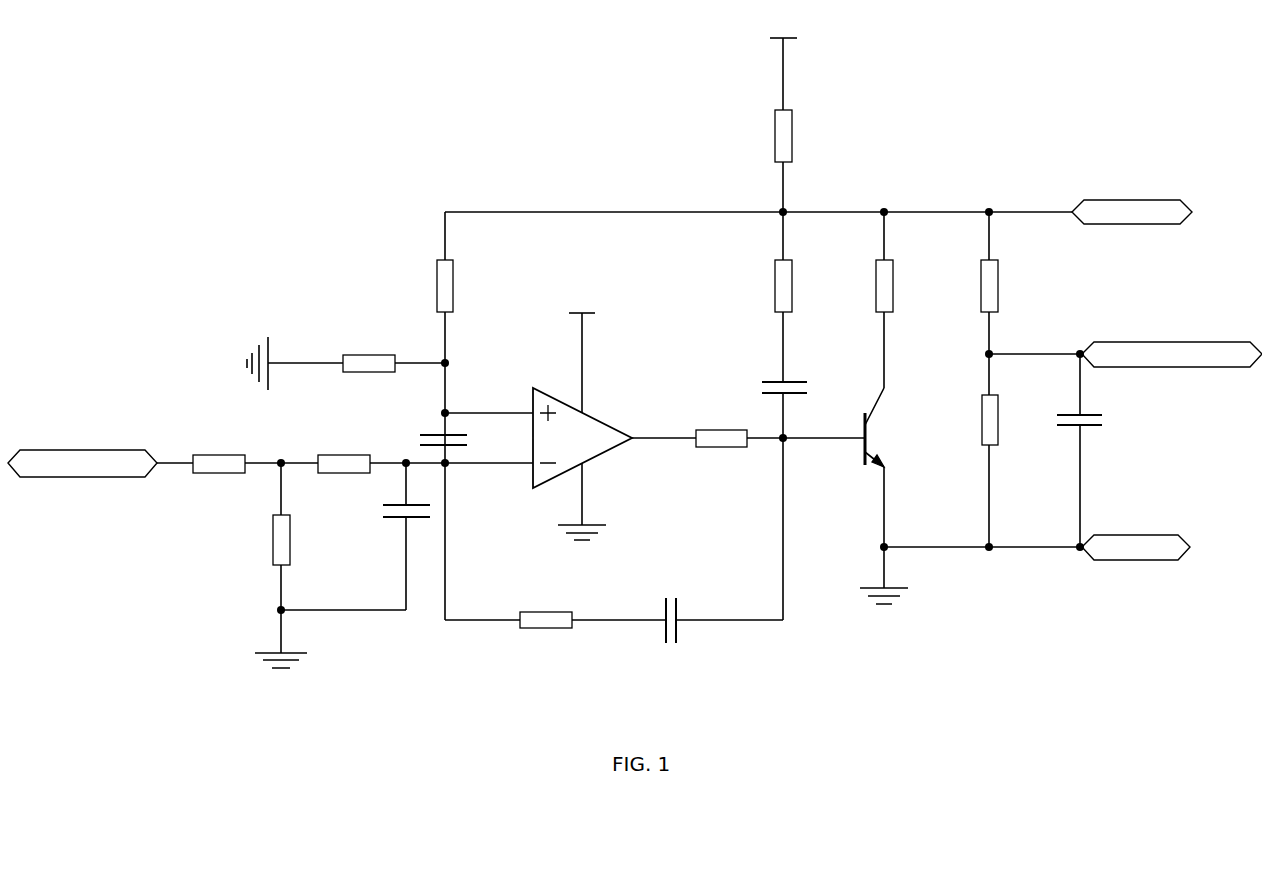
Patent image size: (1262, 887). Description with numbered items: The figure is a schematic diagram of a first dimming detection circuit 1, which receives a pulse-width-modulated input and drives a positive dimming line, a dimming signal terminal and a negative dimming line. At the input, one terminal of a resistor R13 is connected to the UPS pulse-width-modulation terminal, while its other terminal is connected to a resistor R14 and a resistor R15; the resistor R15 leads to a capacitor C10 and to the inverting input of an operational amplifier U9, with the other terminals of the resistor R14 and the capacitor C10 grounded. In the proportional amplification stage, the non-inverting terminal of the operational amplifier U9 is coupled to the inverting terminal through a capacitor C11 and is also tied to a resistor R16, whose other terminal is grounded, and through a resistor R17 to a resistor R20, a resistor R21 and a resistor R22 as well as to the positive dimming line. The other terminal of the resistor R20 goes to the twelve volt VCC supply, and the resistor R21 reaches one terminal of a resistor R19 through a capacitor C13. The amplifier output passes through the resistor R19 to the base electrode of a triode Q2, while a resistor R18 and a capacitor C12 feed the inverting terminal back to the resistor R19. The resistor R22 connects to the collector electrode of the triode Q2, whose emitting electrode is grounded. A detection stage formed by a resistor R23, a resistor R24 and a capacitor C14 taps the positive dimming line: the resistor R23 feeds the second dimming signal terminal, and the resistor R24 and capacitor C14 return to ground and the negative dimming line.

The first dimming detection circuit 1 is at (905, 175).
The resistor R13 is at (219, 453).
The resistor R14 is at (296, 540).
The resistor R15 is at (344, 453).
The resistor R16 is at (369, 353).
The resistor R17 is at (460, 286).
The resistor R18 is at (546, 610).
The resistor R19 is at (721, 428).
The resistor R20 is at (799, 136).
The resistor R21 is at (799, 286).
The resistor R22 is at (900, 286).
The resistor R23 is at (1005, 286).
The resistor R24 is at (1005, 420).
The capacitor C10 is at (384, 516).
The capacitor C11 is at (458, 437).
The capacitor C12 is at (669, 610).
The capacitor C13 is at (800, 389).
The capacitor C14 is at (1095, 421).
The operational amplifier U9 is at (596, 427).
The triode Q2 is at (889, 427).